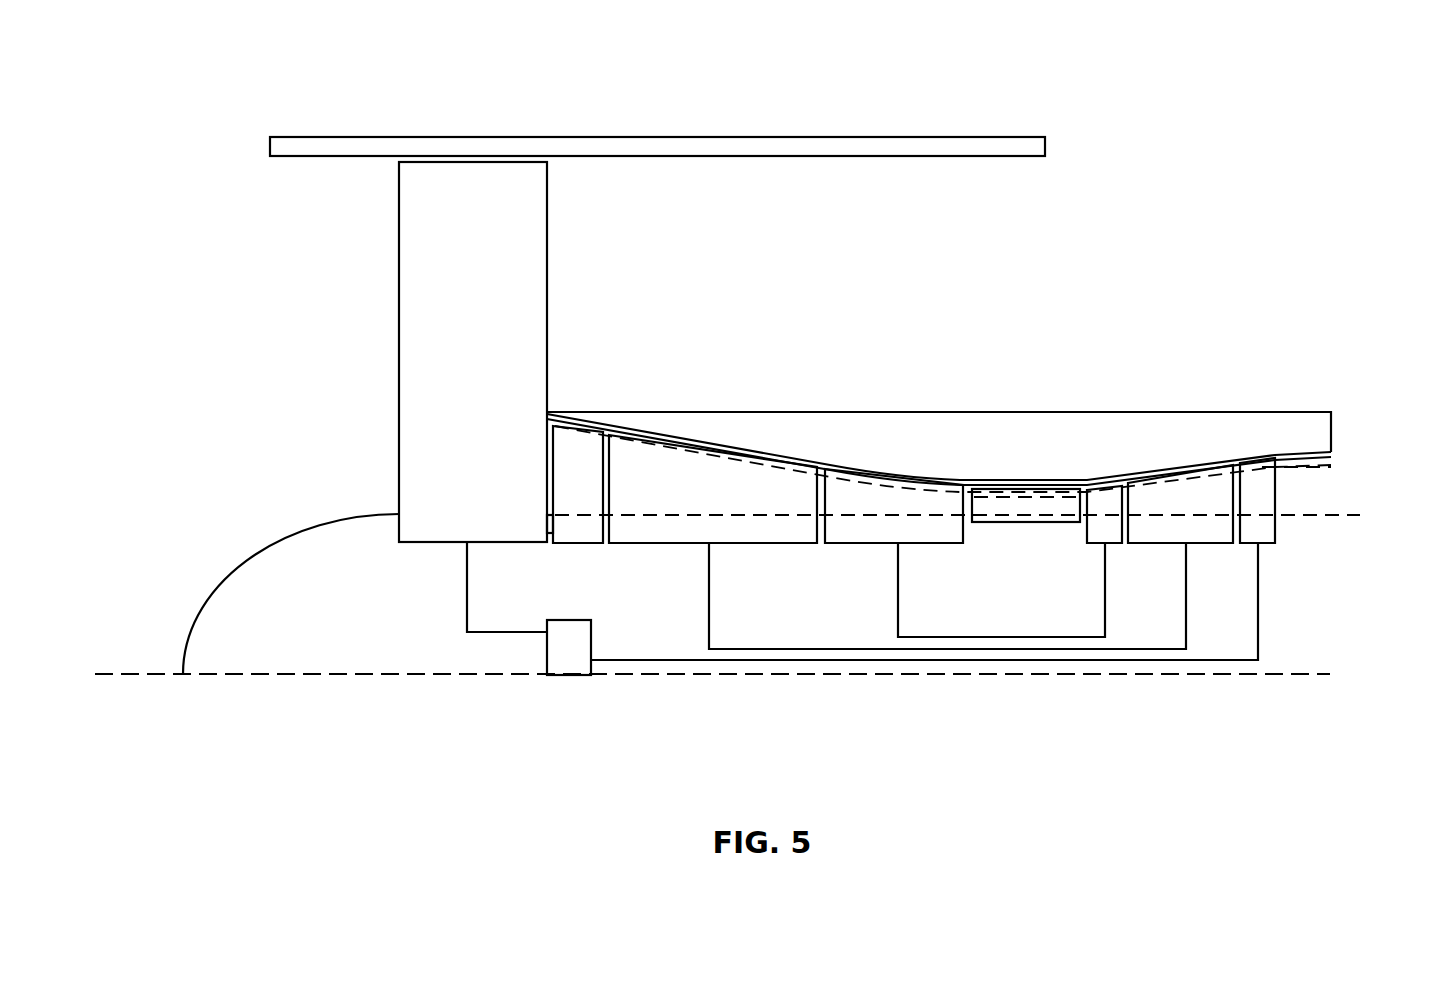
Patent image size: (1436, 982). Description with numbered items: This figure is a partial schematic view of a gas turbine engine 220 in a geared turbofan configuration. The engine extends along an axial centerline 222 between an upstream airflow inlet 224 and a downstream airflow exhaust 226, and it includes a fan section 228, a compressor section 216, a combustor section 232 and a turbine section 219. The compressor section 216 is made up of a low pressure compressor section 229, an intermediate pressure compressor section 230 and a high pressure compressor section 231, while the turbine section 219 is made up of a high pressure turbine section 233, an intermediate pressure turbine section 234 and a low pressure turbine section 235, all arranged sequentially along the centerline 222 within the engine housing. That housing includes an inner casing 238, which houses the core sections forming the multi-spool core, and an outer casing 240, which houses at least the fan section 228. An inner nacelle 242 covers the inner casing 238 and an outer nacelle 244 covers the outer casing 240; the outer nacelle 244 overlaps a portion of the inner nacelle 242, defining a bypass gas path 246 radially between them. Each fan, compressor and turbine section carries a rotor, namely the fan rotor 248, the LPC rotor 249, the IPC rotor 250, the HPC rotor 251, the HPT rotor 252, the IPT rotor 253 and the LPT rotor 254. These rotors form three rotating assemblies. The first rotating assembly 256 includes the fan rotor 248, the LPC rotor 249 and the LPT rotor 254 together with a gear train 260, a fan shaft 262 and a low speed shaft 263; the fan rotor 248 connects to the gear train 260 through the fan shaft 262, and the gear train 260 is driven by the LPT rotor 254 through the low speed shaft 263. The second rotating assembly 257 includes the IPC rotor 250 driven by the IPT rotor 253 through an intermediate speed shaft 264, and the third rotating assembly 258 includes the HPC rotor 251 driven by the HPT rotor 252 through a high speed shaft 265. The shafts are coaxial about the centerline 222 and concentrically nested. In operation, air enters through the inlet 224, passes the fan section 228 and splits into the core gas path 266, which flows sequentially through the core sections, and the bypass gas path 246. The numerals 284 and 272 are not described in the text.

The gas turbine engine 220 is at (235, 100).
The outer casing 240 is at (670, 139).
The outer nacelle 244 is at (948, 137).
The upstream airflow inlet 224 is at (270, 148).
The fan section 228 is at (551, 247).
The housing interior 284 is at (431, 292).
The compressor section 216 is at (643, 341).
The bypass gas path 246 is at (807, 298).
The turbine section 219 is at (1251, 319).
The inner nacelle 242 is at (1332, 413).
The inner casing 238 is at (731, 447).
The low pressure compressor section 229 is at (576, 426).
The intermediate pressure compressor section 230 is at (656, 442).
The high pressure compressor section 231 is at (889, 474).
The combustor section 232 is at (1023, 487).
The high pressure turbine section 233 is at (1101, 487).
The intermediate pressure turbine section 234 is at (1176, 472).
The low pressure turbine section 235 is at (1253, 462).
The downstream airflow exhaust 226 is at (1331, 467).
The core gas path 266 is at (1320, 492).
The connector 272 is at (547, 472).
The fan rotor 248 is at (430, 545).
The LPC rotor 249 is at (578, 545).
The IPC rotor 250 is at (685, 545).
The HPC rotor 251 is at (865, 545).
The HPT rotor 252 is at (1098, 545).
The IPT rotor 253 is at (1155, 545).
The LPT rotor 254 is at (1265, 545).
The fan shaft 262 is at (510, 632).
The first rotating assembly 256 is at (526, 659).
The gear train 260 is at (577, 665).
The low speed shaft 263 is at (665, 661).
The intermediate speed shaft 264 is at (780, 650).
The high speed shaft 265 is at (985, 638).
The second rotating assembly 257 is at (706, 632).
The third rotating assembly 258 is at (895, 632).
The axial centerline 222 is at (1280, 675).